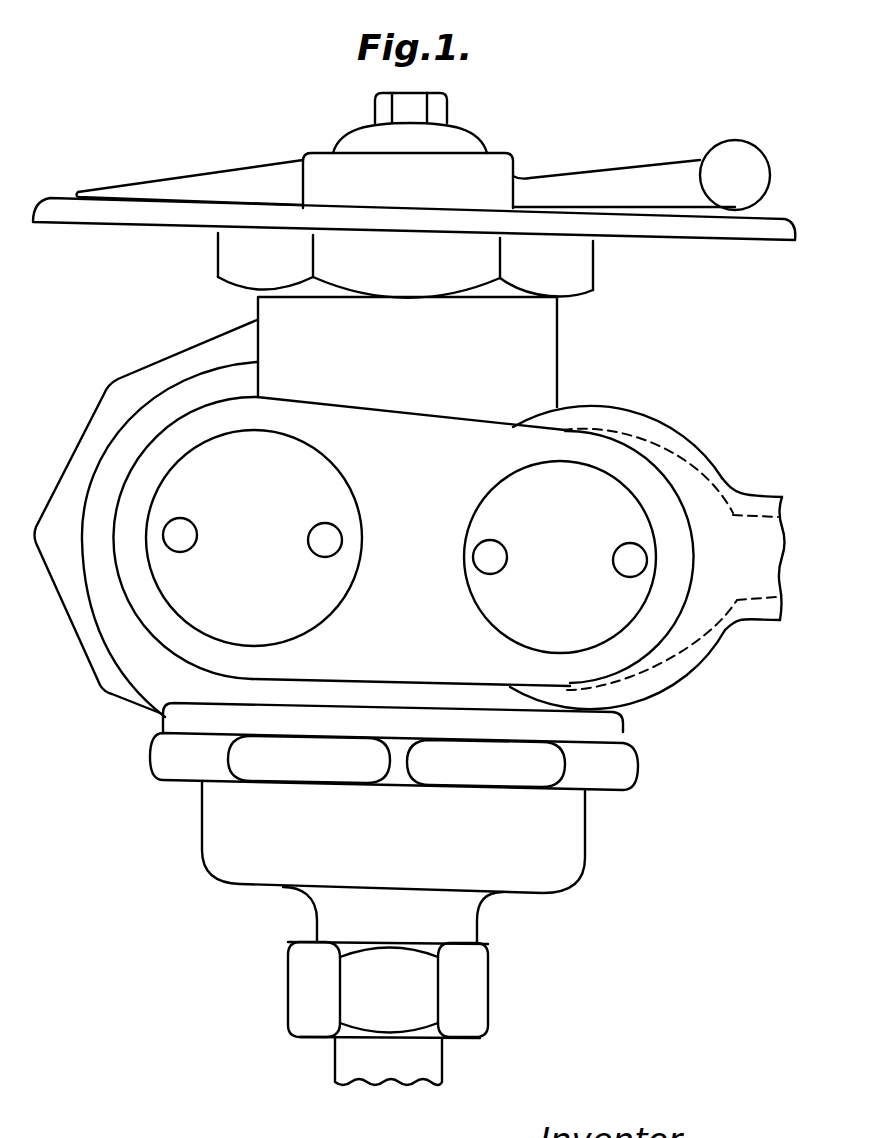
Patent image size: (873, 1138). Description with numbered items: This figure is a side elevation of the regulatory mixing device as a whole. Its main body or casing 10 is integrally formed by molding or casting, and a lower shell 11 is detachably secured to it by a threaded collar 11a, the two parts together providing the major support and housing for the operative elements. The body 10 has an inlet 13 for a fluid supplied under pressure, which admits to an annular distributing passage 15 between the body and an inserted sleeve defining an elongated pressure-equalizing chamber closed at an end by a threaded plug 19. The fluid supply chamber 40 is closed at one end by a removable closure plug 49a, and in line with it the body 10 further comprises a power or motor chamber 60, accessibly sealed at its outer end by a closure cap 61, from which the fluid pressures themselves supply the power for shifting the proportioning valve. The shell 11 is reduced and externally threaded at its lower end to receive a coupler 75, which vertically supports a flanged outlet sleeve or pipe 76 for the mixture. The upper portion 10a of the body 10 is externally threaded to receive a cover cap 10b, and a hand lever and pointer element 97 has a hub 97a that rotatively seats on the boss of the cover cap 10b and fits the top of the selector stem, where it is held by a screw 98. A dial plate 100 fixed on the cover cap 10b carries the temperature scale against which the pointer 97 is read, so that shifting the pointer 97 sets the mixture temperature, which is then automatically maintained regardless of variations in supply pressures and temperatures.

The main body 10 is at (405, 518).
The upper portion of the body 10a is at (548, 350).
The cover cap 10b is at (582, 266).
The lower shell 11 is at (573, 820).
The threaded collar 11a is at (628, 773).
The inlet 13 is at (758, 620).
The annular distributing passage 15 is at (683, 471).
The threaded plug 19 is at (503, 615).
The fluid supply chamber 40 is at (130, 493).
The closure plug 49a is at (313, 620).
The power chamber 60 is at (117, 447).
The closure cap 61 is at (103, 405).
The coupler 75 is at (473, 998).
The outlet sleeve 76 is at (435, 1071).
The hand lever and pointer element 97 is at (237, 170).
The hub 97a is at (482, 142).
The screw 98 is at (446, 103).
The dial plate 100 is at (178, 226).